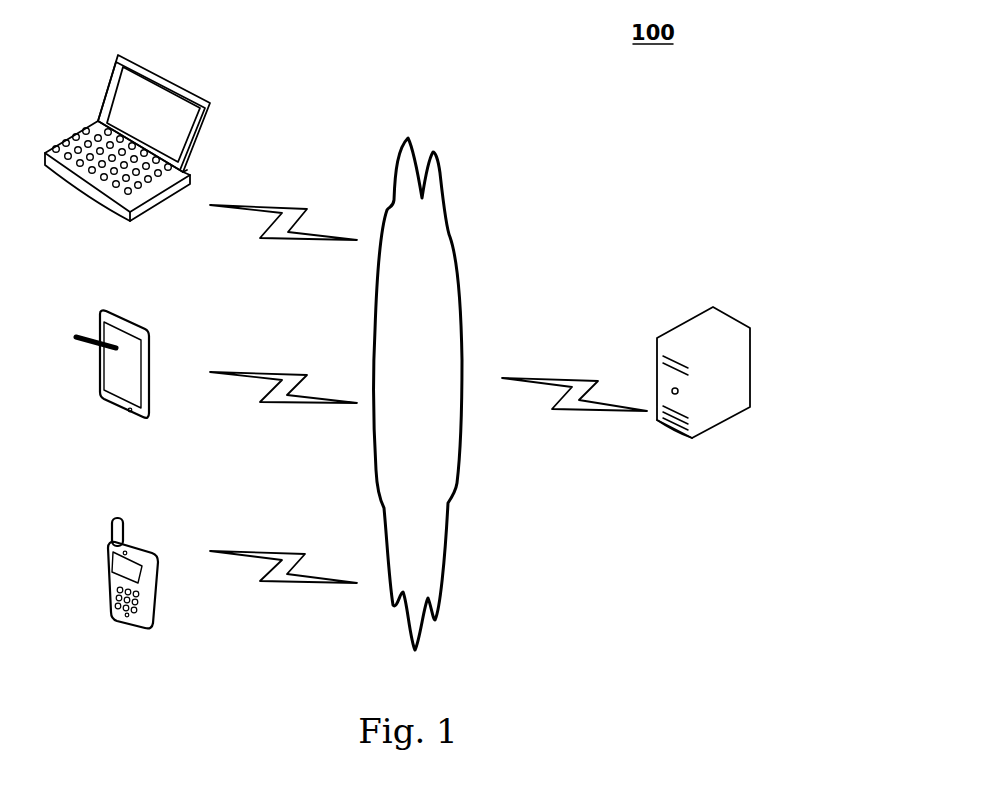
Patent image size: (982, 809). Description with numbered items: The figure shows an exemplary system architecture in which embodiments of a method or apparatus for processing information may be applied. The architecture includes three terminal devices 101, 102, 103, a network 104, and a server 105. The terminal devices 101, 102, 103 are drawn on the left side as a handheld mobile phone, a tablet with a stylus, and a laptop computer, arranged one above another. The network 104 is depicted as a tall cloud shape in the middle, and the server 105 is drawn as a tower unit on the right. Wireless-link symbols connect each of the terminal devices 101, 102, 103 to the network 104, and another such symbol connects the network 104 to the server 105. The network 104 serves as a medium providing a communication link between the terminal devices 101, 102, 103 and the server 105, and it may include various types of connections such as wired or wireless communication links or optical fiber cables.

The terminal device 101 is at (133, 593).
The terminal device 102 is at (112, 383).
The terminal device 103 is at (127, 156).
The network 104 is at (418, 394).
The server 105 is at (703, 391).